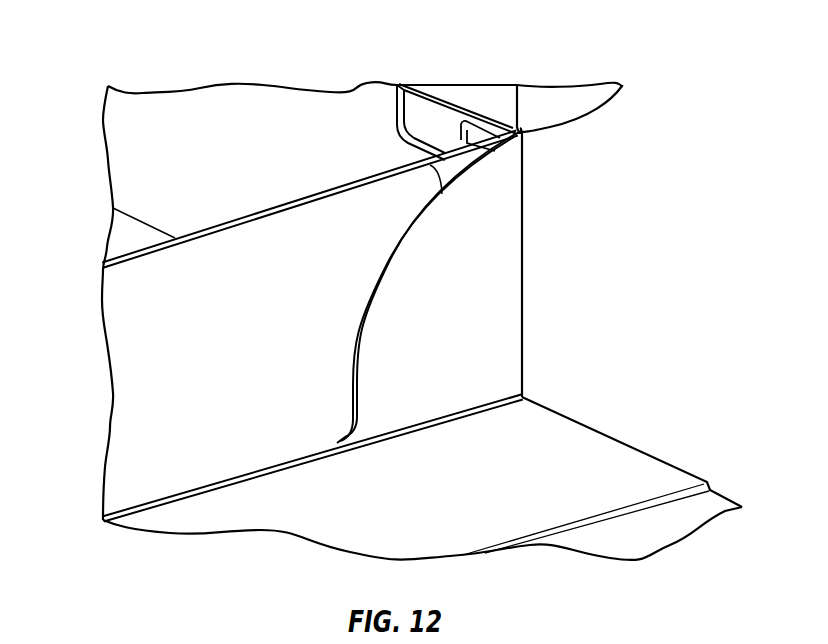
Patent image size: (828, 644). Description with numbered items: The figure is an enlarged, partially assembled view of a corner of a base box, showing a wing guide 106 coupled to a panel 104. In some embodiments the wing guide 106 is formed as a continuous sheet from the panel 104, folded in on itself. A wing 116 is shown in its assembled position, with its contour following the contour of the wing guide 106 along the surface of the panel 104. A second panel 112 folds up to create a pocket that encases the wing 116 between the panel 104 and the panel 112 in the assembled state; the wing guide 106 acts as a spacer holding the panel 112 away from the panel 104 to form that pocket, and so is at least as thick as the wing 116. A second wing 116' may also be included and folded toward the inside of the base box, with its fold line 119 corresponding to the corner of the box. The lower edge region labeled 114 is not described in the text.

The panel 104 is at (448, 168).
The wing guide 106 is at (170, 374).
The panel 112 is at (577, 450).
The lip 114 is at (665, 520).
The wing 116 is at (490, 288).
The second wing 116' is at (550, 112).
The fold line 119 is at (512, 103).